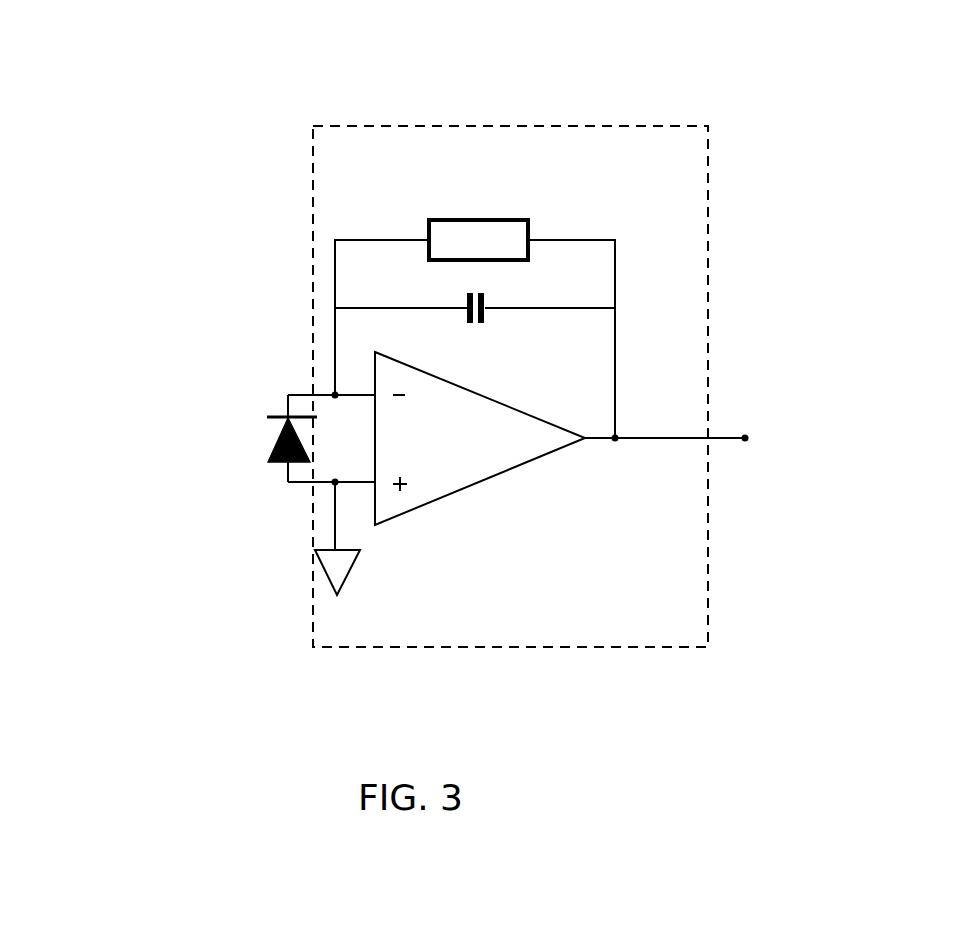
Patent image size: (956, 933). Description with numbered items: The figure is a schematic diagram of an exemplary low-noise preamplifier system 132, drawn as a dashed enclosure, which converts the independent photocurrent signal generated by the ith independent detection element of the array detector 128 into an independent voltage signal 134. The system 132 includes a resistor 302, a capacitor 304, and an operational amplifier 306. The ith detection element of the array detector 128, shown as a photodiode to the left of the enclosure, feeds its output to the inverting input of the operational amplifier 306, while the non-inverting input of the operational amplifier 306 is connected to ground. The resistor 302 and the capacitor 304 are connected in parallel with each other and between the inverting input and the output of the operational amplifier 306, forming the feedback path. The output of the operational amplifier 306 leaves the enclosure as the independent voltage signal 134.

The low-noise preamplifier system 132 is at (552, 125).
The resistor 302 is at (510, 217).
The capacitor 304 is at (490, 322).
The operational amplifier 306 is at (463, 488).
The array detector 128 is at (184, 464).
The independent voltage signal 134 is at (717, 413).